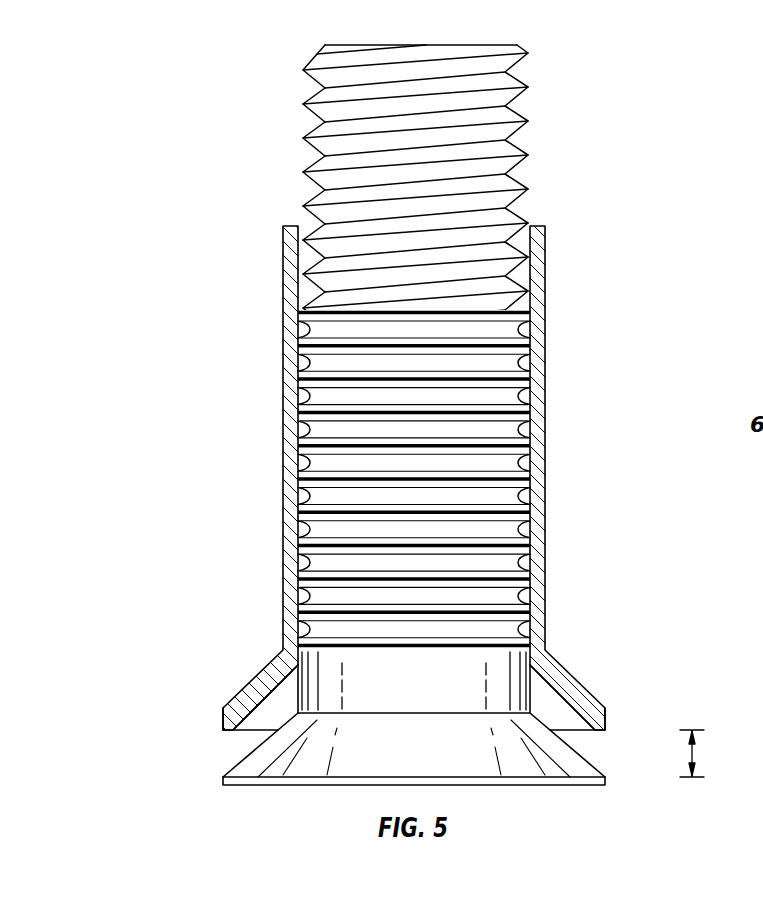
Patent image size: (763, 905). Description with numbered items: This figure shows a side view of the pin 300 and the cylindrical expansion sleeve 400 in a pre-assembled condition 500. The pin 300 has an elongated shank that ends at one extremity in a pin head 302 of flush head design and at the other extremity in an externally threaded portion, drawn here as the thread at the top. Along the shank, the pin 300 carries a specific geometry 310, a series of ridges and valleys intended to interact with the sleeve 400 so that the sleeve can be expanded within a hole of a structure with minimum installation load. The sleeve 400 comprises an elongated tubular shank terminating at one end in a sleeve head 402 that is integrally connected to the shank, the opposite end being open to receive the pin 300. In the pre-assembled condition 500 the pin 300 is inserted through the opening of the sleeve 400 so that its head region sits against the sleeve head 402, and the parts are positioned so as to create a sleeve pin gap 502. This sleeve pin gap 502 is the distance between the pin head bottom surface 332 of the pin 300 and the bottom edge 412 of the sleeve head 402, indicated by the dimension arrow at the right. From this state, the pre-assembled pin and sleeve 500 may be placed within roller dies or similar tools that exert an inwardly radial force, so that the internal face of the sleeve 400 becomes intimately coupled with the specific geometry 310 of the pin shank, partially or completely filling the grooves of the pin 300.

The pre-assembled condition 500 is at (208, 50).
The pin 300 is at (470, 183).
The specific geometry 310 is at (292, 404).
The sleeve 400 is at (533, 272).
The sleeve head 402 is at (550, 710).
The bottom edge 412 is at (603, 728).
The pin head 302 is at (545, 760).
The pin head bottom surface 332 is at (558, 786).
The sleeve pin gap 502 is at (695, 750).